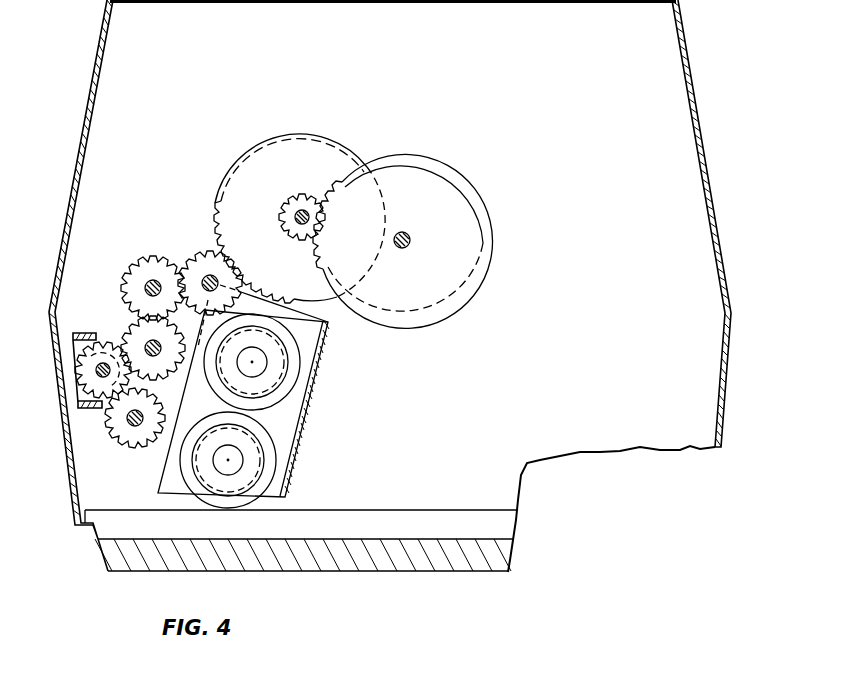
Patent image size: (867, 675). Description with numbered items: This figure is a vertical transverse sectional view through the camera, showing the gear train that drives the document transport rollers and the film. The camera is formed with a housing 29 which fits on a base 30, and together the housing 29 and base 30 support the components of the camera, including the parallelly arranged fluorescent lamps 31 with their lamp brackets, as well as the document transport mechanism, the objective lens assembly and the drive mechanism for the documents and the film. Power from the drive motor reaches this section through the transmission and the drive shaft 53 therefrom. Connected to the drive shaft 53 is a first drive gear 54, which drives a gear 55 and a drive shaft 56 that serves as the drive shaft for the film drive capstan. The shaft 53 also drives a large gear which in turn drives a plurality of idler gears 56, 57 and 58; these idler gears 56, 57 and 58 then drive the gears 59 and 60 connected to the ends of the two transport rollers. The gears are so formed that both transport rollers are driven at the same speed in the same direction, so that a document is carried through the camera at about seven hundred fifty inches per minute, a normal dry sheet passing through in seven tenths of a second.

The housing 29 is at (78, 156).
The base 30 is at (405, 572).
The fluorescent lamps 31 is at (235, 454).
The drive shaft 53 is at (295, 212).
The first drive gear 54 is at (297, 195).
The gear 55 is at (462, 192).
The drive shaft / idler gear 56 is at (410, 243).
The idler gear 57 is at (142, 262).
The idler gear 58 is at (97, 382).
The gear 59 is at (130, 334).
The gear 60 is at (138, 433).